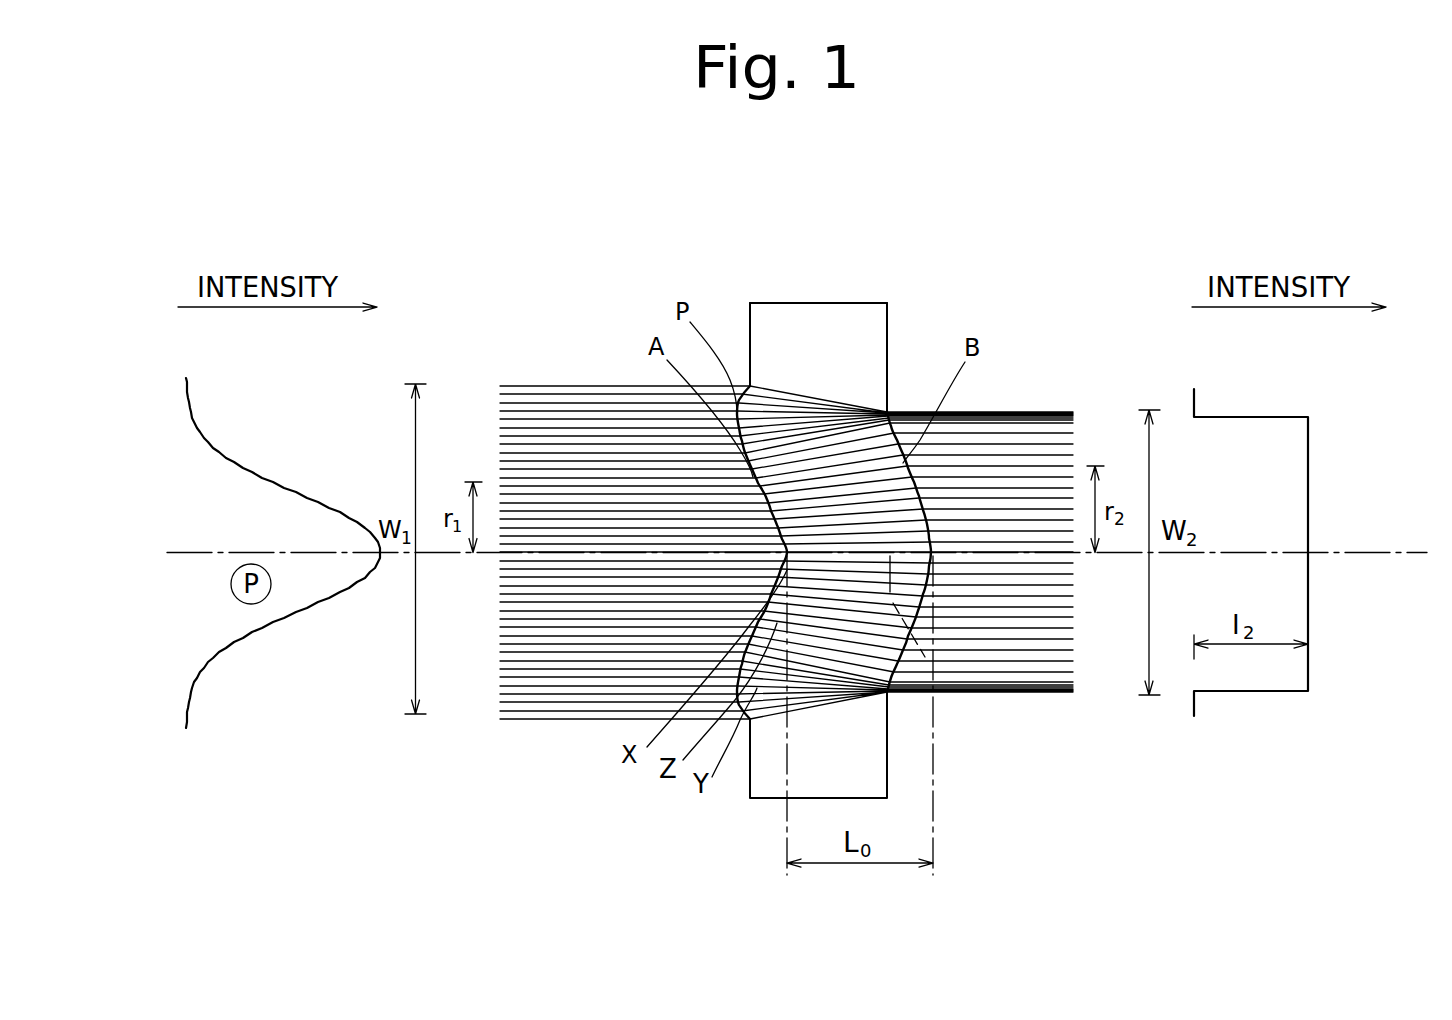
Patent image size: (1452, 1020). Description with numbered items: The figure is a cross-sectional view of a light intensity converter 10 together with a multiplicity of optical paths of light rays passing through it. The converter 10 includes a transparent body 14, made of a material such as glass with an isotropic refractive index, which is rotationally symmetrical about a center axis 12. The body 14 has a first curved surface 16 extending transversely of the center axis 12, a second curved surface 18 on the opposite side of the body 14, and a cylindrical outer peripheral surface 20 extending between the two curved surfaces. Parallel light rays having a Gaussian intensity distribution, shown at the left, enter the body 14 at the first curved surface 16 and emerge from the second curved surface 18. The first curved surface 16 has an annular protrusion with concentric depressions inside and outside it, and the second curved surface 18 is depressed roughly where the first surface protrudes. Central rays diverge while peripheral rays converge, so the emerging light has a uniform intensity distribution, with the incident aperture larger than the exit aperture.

The light intensity converter 10 is at (826, 460).
The center axis 12 is at (925, 657).
The transparent body 14 is at (818, 505).
The first curved surface 16 is at (750, 325).
The second curved surface 18 is at (888, 343).
The cylindrical outer peripheral surface 20 is at (775, 303).